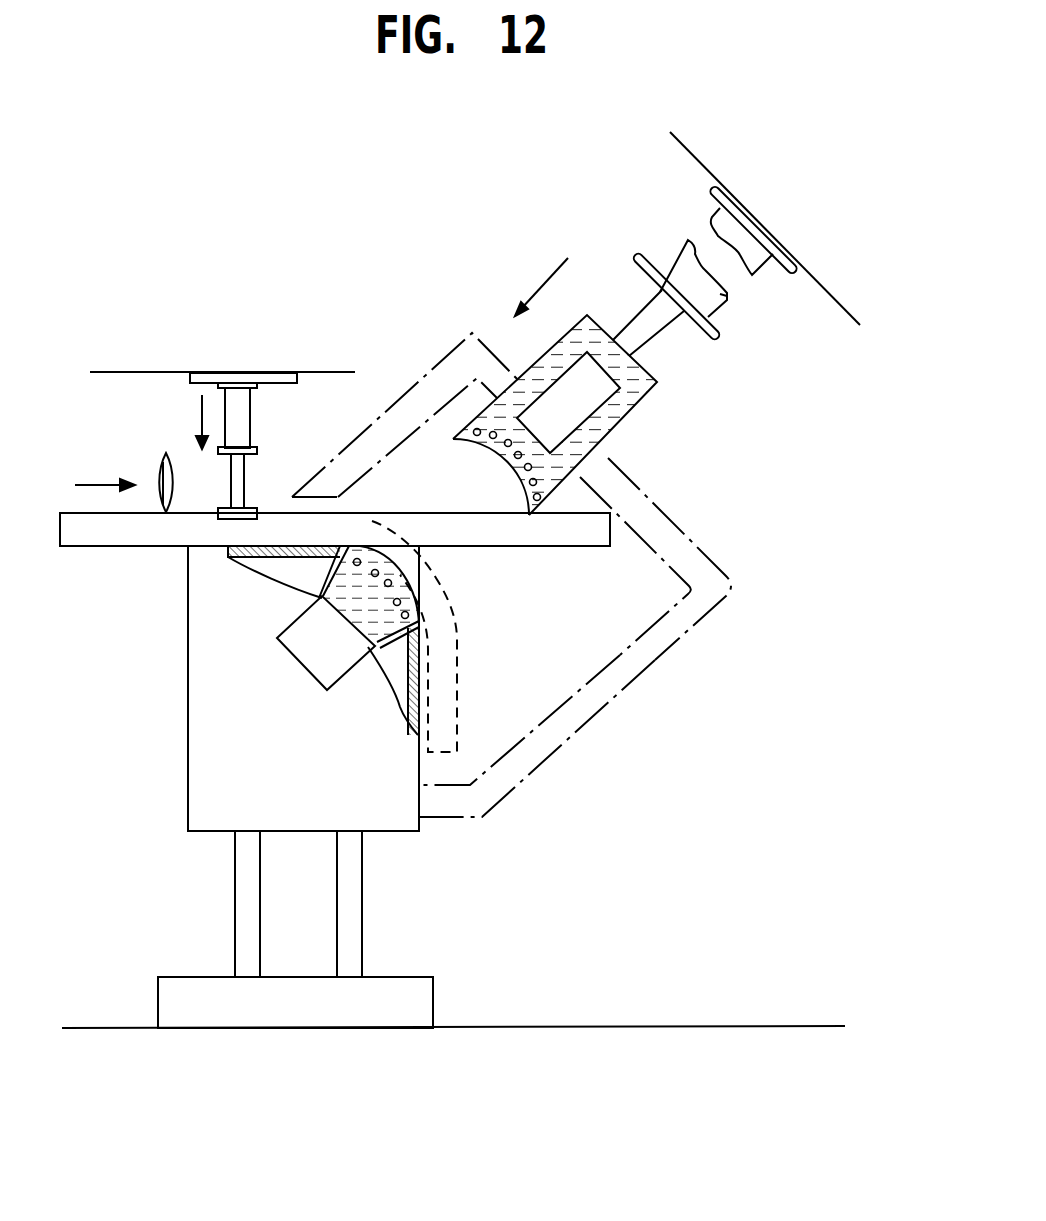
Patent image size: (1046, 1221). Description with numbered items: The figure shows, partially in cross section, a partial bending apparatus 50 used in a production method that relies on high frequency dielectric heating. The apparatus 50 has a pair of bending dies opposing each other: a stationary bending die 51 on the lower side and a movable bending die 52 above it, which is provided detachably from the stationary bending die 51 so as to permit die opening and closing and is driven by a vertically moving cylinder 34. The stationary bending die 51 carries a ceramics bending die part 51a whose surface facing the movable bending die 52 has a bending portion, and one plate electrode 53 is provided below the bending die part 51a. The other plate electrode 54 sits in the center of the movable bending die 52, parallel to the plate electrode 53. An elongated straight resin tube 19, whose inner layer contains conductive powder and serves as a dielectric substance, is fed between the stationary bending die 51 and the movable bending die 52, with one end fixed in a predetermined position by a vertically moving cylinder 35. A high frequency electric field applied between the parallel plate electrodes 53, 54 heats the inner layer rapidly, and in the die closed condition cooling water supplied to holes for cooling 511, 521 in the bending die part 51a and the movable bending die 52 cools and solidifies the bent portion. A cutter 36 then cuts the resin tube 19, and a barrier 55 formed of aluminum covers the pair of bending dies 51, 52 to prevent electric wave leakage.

The resin tube 19 is at (102, 532).
The vertically moving cylinder 34 is at (721, 295).
The vertically moving cylinder 35 is at (240, 412).
The cutter 36 is at (163, 468).
The partial bending apparatus 50 is at (610, 737).
The stationary bending die 51 is at (375, 802).
The holes for cooling 511 is at (410, 612).
The bending die part 51a is at (342, 610).
The movable bending die 52 is at (617, 432).
The holes for cooling 521 is at (493, 447).
The plate electrode 53 is at (277, 640).
The plate electrode 54 is at (540, 420).
The barrier 55 is at (538, 753).